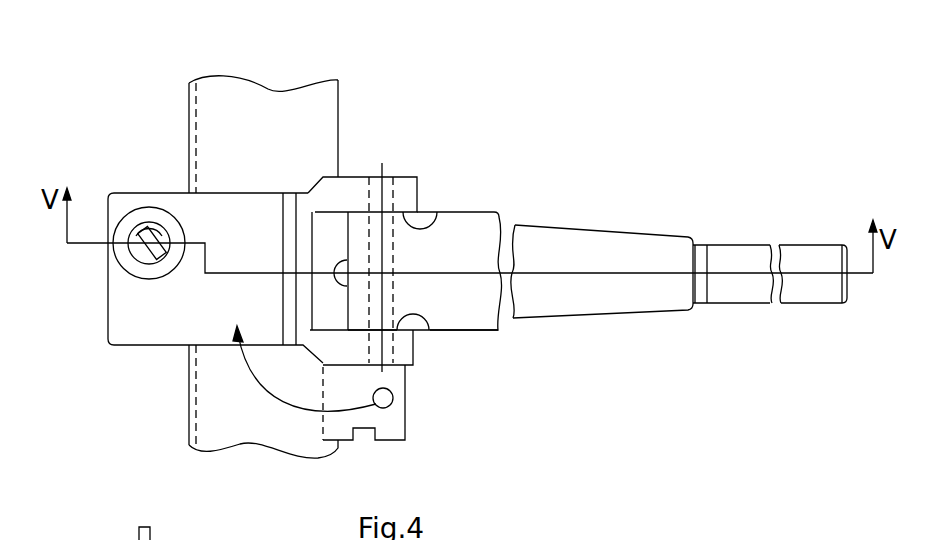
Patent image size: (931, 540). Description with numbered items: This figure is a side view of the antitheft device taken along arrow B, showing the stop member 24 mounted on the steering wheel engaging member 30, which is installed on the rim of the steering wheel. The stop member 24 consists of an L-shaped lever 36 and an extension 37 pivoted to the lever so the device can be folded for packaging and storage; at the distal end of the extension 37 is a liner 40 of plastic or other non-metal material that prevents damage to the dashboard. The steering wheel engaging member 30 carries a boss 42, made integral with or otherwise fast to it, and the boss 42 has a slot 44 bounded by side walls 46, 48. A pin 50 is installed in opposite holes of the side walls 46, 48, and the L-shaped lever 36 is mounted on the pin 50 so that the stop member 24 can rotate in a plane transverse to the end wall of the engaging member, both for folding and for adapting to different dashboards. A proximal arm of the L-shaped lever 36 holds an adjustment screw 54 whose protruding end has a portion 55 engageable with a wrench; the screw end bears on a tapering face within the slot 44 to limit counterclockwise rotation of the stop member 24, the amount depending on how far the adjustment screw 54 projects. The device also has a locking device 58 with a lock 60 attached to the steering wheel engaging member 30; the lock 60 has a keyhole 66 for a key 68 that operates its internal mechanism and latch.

The stop member 24 is at (628, 233).
The steering wheel engaging member 30 is at (221, 77).
The L-shaped lever 36 is at (465, 291).
The extension 37 is at (743, 243).
The liner 40 is at (847, 244).
The boss 42 is at (360, 176).
The slot 44 is at (317, 228).
The side wall 46 is at (425, 309).
The side wall 48 is at (440, 218).
The pin 50 is at (385, 357).
The adjustment screw 54 is at (335, 273).
The wrench-engageable portion 55 is at (342, 282).
The locking device 58 is at (387, 446).
The lock 60 is at (106, 318).
The keyhole 66 is at (143, 255).
The key 68 is at (88, 539).